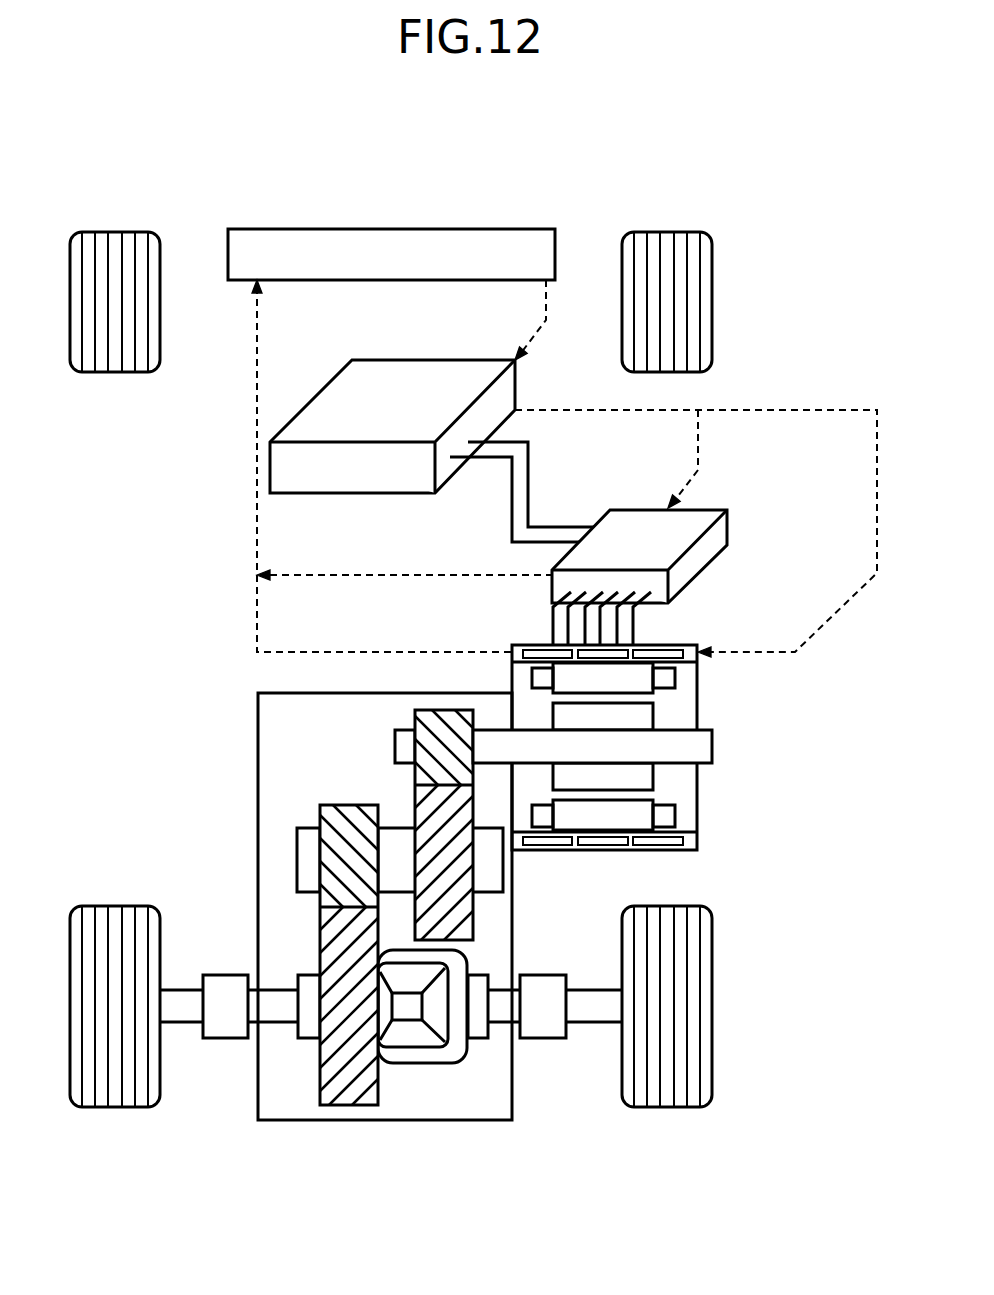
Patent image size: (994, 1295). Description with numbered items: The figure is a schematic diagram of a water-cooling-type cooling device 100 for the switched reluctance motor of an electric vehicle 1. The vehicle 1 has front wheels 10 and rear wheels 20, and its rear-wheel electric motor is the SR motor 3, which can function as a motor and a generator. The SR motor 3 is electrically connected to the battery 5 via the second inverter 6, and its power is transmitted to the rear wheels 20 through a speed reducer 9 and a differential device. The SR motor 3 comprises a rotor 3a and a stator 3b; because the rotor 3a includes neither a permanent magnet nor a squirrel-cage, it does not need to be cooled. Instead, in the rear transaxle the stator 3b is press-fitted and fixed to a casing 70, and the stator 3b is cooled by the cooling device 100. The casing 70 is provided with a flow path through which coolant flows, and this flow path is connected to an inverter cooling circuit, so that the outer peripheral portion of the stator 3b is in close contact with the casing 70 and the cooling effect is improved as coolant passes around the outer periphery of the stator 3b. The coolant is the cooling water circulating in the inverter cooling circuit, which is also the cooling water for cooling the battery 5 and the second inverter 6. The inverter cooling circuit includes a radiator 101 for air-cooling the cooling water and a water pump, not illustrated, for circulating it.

The electric vehicle 1 is at (749, 185).
The water-cooling-type cooling device 100 is at (779, 363).
The radiator 101 is at (417, 229).
The front wheels 10 is at (117, 232).
The rear wheels 20 is at (117, 1107).
The battery 5 is at (415, 360).
The second inverter 6 is at (707, 508).
The casing 70 is at (660, 645).
The switched reluctance motor 3 is at (623, 746).
The rotor 3a is at (633, 713).
The stator 3b is at (633, 678).
The speed reducer 9 is at (243, 753).